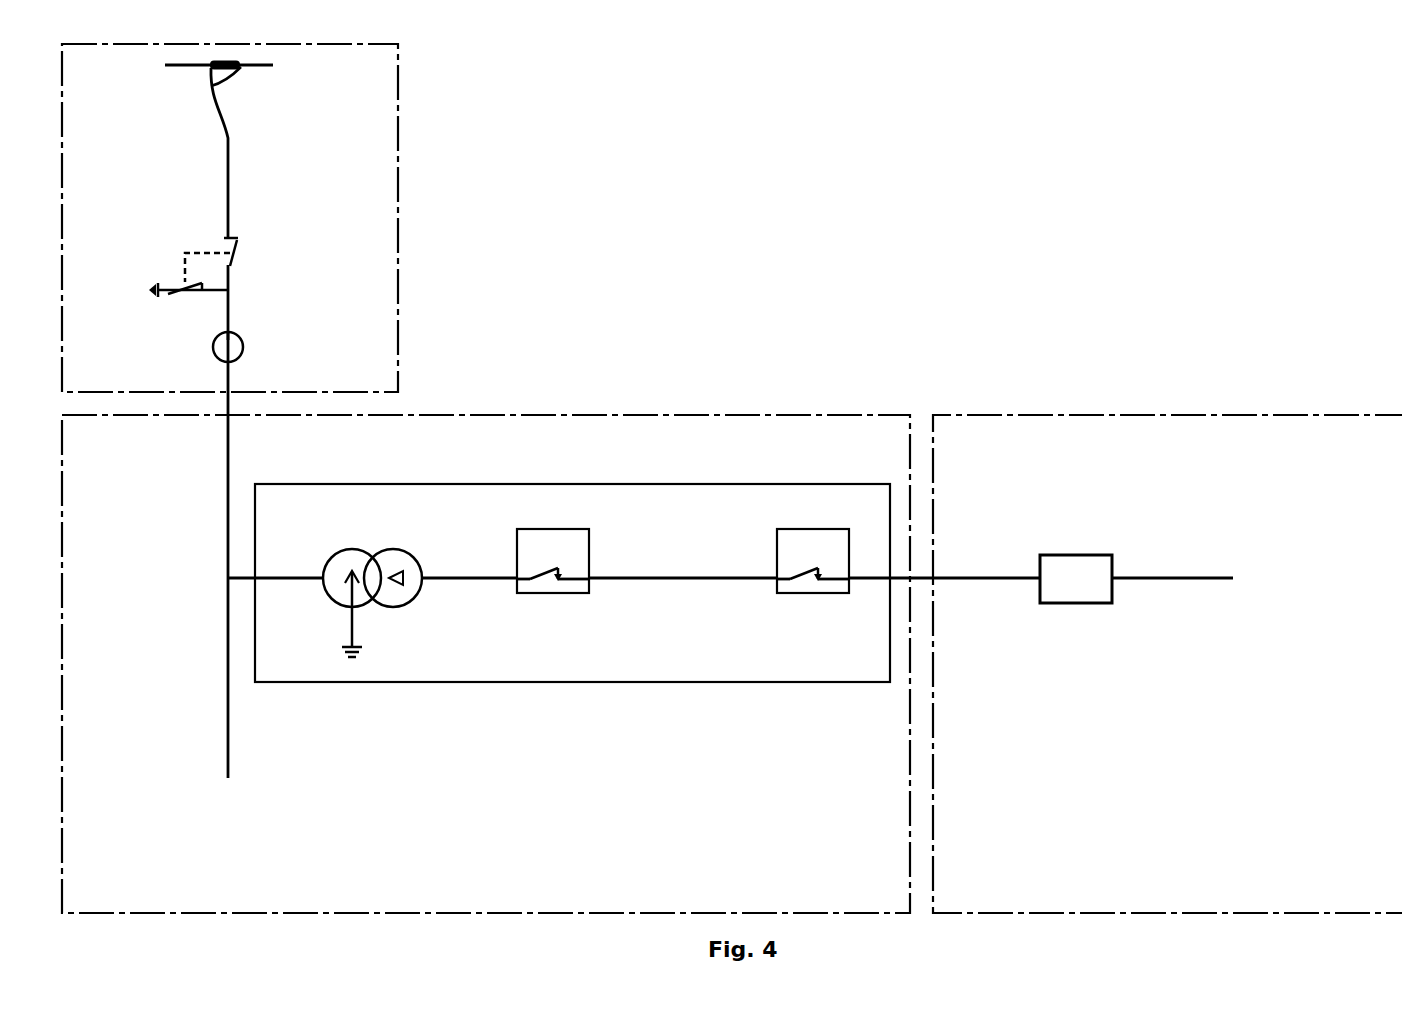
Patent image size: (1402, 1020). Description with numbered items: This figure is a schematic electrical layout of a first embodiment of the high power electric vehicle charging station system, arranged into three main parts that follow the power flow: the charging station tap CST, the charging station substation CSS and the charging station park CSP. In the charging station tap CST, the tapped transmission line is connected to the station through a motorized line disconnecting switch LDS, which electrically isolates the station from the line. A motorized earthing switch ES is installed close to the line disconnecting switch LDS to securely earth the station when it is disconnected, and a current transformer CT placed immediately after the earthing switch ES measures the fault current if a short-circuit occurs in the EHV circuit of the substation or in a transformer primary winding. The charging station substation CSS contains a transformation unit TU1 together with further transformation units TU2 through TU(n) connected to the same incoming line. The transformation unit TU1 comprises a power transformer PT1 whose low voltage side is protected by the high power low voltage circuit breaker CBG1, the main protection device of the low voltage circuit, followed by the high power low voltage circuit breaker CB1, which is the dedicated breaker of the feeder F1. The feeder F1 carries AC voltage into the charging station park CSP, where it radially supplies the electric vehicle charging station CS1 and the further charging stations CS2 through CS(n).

The charging station tap CST is at (230, 218).
The charging station substation CSS is at (486, 664).
The charging station park CSP is at (1167, 664).
The motorized line disconnecting switch LDS is at (242, 289).
The motorized earthing switch ES is at (188, 301).
The current transformer CT is at (248, 347).
The transformation unit TU1 is at (580, 583).
The power transformer PT1 is at (351, 599).
The high power low voltage circuit breaker CBG1 is at (553, 561).
The high power low voltage circuit breaker CB1 is at (813, 561).
The low voltage feeder F1 is at (986, 564).
The electric vehicle charging station CS1 is at (1076, 579).
The electric vehicle charging stations CS2 is at (1245, 579).
The transformation units TU2 is at (229, 761).